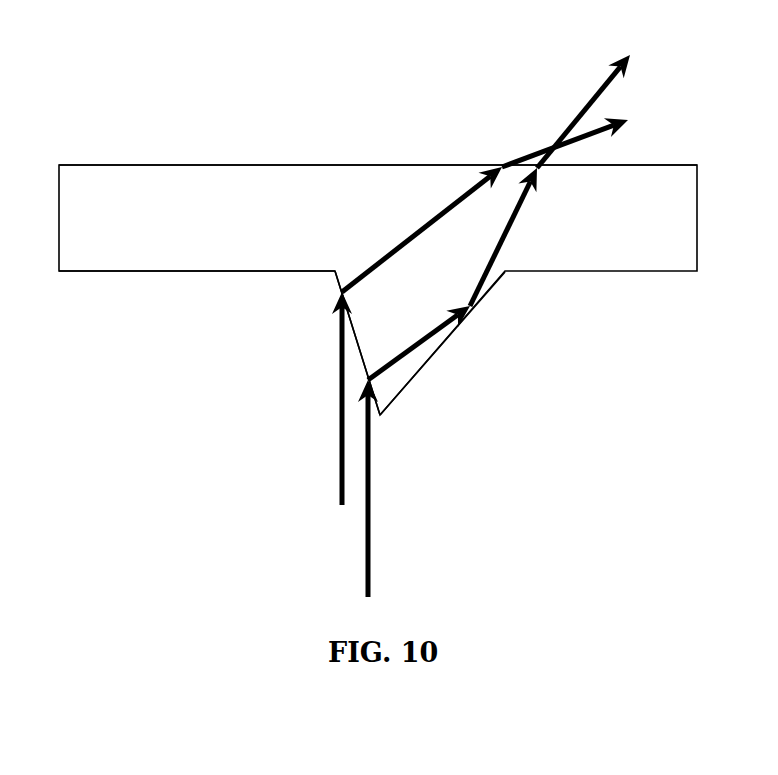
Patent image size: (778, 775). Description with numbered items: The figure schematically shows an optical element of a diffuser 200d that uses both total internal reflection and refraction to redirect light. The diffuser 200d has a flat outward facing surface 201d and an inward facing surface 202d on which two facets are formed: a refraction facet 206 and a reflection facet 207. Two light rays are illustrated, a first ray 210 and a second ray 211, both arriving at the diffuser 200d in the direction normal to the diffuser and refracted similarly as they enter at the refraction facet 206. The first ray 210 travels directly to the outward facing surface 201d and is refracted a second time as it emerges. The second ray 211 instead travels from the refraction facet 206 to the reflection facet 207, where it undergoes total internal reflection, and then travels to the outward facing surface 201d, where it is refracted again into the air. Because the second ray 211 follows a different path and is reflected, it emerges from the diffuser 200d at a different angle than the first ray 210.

The diffuser 200d is at (147, 177).
The outward facing surface 201d is at (285, 165).
The inward facing surface 202d is at (258, 270).
The refraction facet 206 is at (353, 350).
The reflection facet 207 is at (420, 372).
The first ray 210 is at (340, 467).
The second ray 211 is at (372, 515).